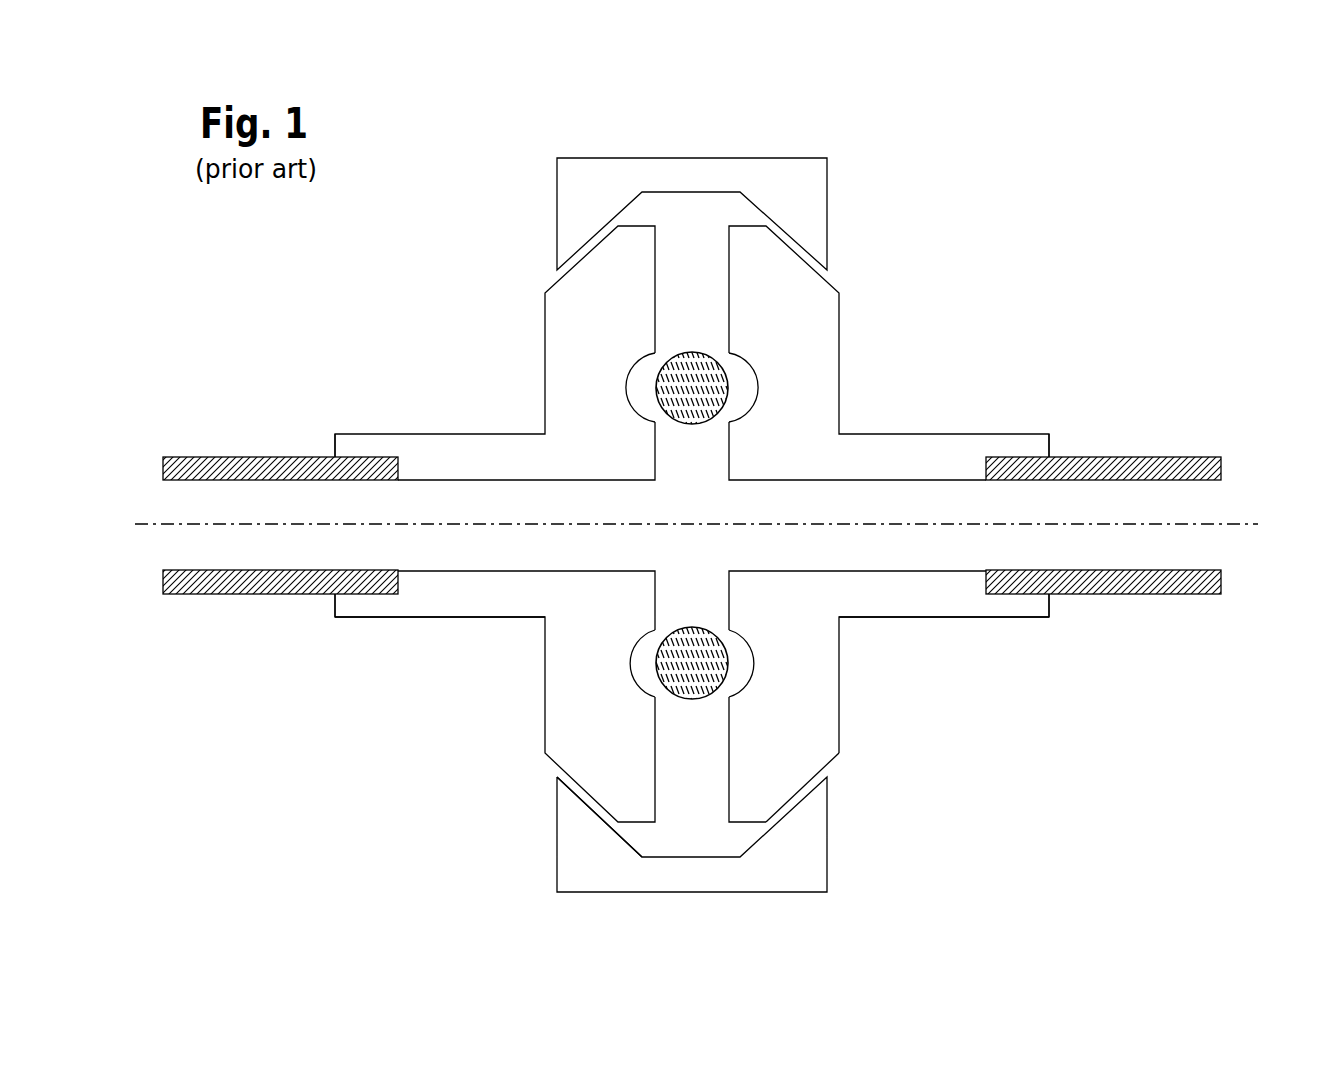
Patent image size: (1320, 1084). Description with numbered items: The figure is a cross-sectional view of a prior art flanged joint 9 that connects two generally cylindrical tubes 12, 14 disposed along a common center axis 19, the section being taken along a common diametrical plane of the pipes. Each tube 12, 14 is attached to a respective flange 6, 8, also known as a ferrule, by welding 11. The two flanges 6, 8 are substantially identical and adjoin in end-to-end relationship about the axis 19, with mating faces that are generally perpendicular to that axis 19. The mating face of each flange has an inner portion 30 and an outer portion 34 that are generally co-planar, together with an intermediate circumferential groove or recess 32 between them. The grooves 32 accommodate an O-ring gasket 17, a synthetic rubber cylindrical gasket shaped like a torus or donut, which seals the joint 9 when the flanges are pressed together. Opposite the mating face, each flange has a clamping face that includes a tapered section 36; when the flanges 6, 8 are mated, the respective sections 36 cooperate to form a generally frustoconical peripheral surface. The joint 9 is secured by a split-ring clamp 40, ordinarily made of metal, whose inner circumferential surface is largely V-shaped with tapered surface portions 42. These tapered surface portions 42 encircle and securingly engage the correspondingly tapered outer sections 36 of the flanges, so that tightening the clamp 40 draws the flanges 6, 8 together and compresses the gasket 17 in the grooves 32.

The joint 9 is at (963, 290).
The flange 6 is at (410, 619).
The flange 8 is at (940, 619).
The welding 11 is at (334, 455).
The tube 12 is at (248, 455).
The tube 14 is at (1135, 455).
The O-ring gasket 17 is at (730, 373).
The center axis 19 is at (1232, 526).
The inner portion 30 is at (655, 605).
The circumferential groove 32 is at (620, 673).
The outer portion 34 is at (655, 755).
The tapered section 36 is at (830, 768).
The split-ring clamp 40 is at (830, 882).
The tapered surface portions 42 is at (597, 812).